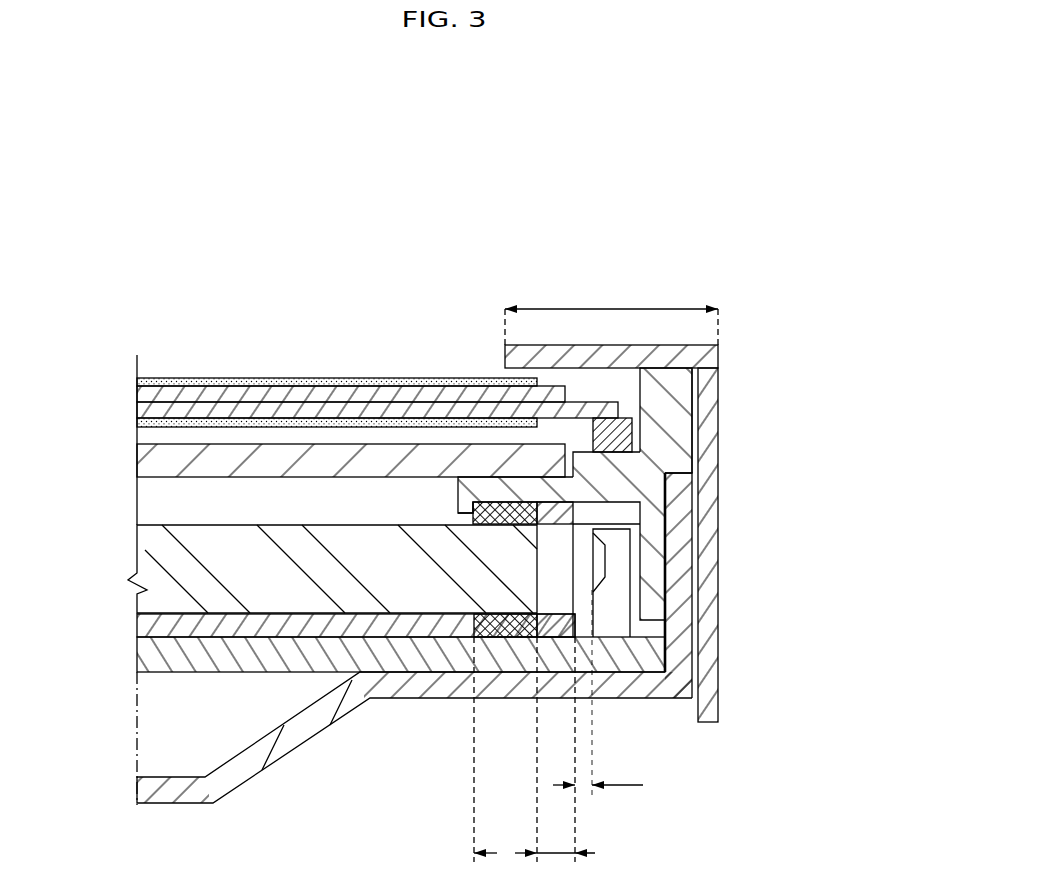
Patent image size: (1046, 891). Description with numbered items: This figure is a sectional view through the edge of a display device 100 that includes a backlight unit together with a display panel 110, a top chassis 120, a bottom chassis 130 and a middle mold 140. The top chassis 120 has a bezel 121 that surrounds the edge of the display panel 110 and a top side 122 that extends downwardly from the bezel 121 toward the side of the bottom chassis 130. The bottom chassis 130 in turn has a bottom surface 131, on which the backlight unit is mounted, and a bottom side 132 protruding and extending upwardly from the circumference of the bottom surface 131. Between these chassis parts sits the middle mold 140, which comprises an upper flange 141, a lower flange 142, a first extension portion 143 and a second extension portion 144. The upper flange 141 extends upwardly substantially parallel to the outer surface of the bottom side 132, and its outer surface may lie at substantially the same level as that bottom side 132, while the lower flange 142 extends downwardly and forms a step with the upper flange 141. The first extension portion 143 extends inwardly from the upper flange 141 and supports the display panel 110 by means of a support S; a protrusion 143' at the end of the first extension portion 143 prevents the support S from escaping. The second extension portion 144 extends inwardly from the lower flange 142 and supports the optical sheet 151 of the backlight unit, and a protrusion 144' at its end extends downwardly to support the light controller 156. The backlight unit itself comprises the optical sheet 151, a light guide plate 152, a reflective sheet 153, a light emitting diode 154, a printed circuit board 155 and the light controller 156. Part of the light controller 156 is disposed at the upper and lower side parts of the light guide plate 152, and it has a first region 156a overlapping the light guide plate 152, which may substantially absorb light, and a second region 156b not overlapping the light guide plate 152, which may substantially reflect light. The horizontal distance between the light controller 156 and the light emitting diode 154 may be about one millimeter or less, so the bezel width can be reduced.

The display device 100 is at (451, 492).
The display panel 110 is at (138, 394).
The top chassis 120 is at (639, 452).
The bezel 121 is at (640, 353).
The top side 122 is at (712, 363).
The bottom chassis 130 is at (441, 673).
The bottom surface 131 is at (625, 698).
The bottom side 132 is at (680, 657).
The middle mold 140 is at (651, 520).
The upper flange 141 is at (680, 418).
The lower flange 142 is at (665, 493).
The first extension portion 143 is at (674, 495).
The protrusion 143' is at (678, 443).
The second extension portion 144 is at (624, 535).
The protrusion 144' is at (618, 556).
The optical sheet 151 is at (138, 460).
The light guide plate 152 is at (145, 550).
The reflective sheet 153 is at (138, 625).
The light emitting diode 154 is at (617, 626).
The printed circuit board 155 is at (138, 657).
The light controller 156 is at (456, 726).
The first region 156a is at (493, 632).
The second region 156b is at (555, 630).
The support S is at (628, 418).